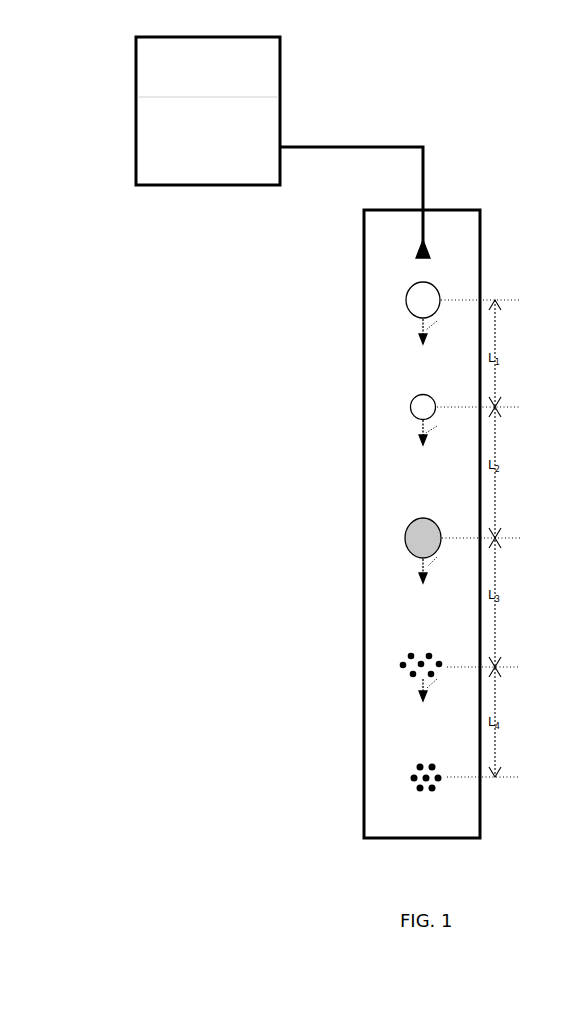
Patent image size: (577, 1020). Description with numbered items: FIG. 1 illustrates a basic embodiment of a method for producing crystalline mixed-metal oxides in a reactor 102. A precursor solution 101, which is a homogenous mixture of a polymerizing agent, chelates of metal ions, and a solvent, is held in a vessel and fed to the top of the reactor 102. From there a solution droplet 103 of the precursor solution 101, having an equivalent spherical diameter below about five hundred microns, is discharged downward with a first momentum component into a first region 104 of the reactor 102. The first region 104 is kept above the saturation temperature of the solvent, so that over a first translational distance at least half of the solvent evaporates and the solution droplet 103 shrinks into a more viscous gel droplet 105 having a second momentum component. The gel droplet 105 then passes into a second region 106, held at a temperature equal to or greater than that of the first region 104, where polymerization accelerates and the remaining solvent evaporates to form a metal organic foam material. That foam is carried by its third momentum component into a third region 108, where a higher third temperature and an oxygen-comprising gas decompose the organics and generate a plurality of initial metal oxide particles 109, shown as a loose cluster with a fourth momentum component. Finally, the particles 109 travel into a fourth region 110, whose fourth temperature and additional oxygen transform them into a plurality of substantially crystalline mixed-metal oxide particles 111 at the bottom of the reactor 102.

The precursor solution 101 is at (160, 135).
The reactor 102 is at (482, 228).
The solution droplet 103 is at (406, 300).
The first region 104 is at (383, 358).
The gel droplet 105 is at (410, 407).
The second region 106 is at (405, 538).
The third region 108 is at (383, 620).
The plurality of initial metal oxide particles 109 is at (395, 667).
The fourth region 110 is at (383, 718).
The plurality of substantially crystalline mixed-metal oxide particles 111 is at (395, 777).